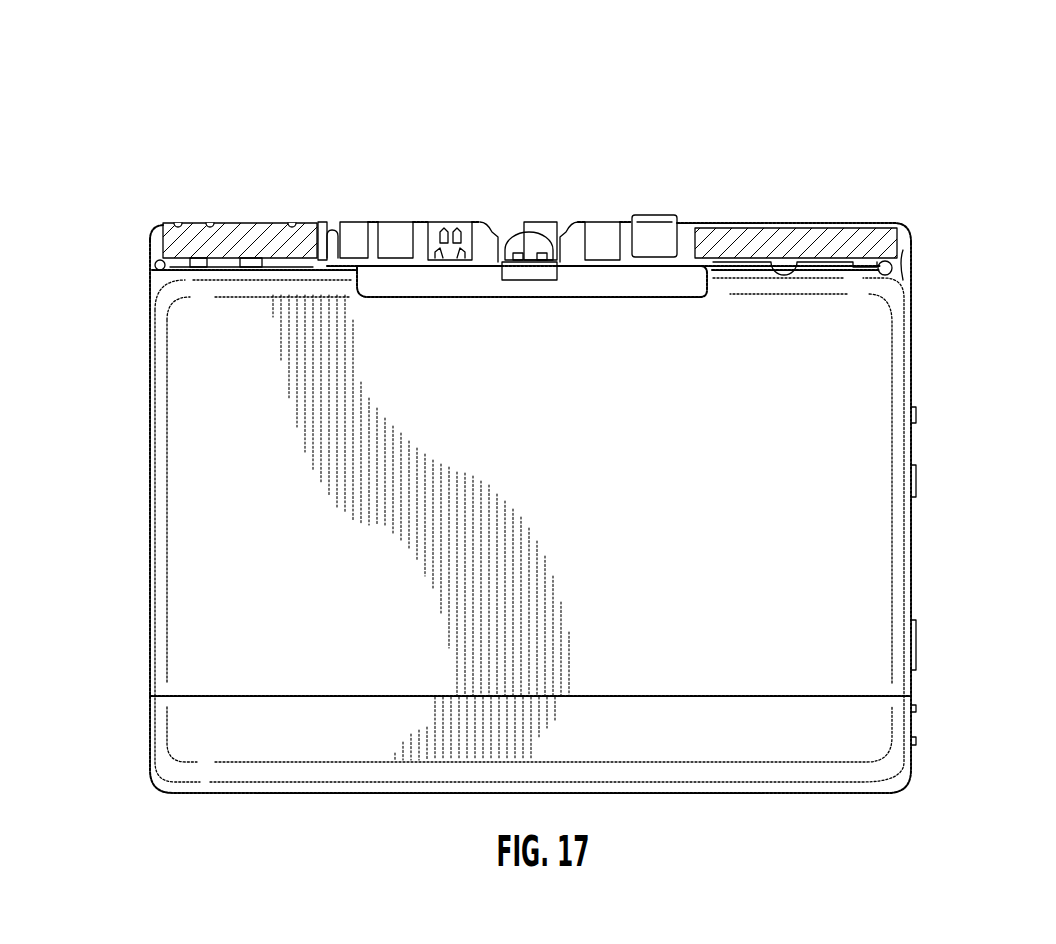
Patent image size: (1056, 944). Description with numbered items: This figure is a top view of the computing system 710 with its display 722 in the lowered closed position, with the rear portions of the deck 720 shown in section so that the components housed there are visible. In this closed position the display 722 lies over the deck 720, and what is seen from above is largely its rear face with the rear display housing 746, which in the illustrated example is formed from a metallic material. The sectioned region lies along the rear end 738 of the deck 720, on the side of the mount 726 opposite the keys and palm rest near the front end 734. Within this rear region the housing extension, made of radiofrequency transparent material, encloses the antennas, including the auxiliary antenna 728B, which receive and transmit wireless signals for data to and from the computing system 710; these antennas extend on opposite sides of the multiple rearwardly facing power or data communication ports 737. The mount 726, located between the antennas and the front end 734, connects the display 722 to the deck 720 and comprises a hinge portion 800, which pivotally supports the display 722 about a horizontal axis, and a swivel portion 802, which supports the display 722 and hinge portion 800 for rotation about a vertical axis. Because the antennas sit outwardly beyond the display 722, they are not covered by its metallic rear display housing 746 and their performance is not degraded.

The computing system 710 is at (1004, 124).
The deck 720 is at (911, 252).
The display 722 is at (149, 258).
The mount 726 is at (533, 295).
The auxiliary antenna 728B is at (240, 222).
The front end 734 is at (719, 806).
The power or data communication ports 737 is at (412, 222).
The rear end 738 is at (641, 118).
The rear display housing 746 is at (598, 475).
The hinge portion 800 is at (502, 272).
The swivel portion 802 is at (522, 240).